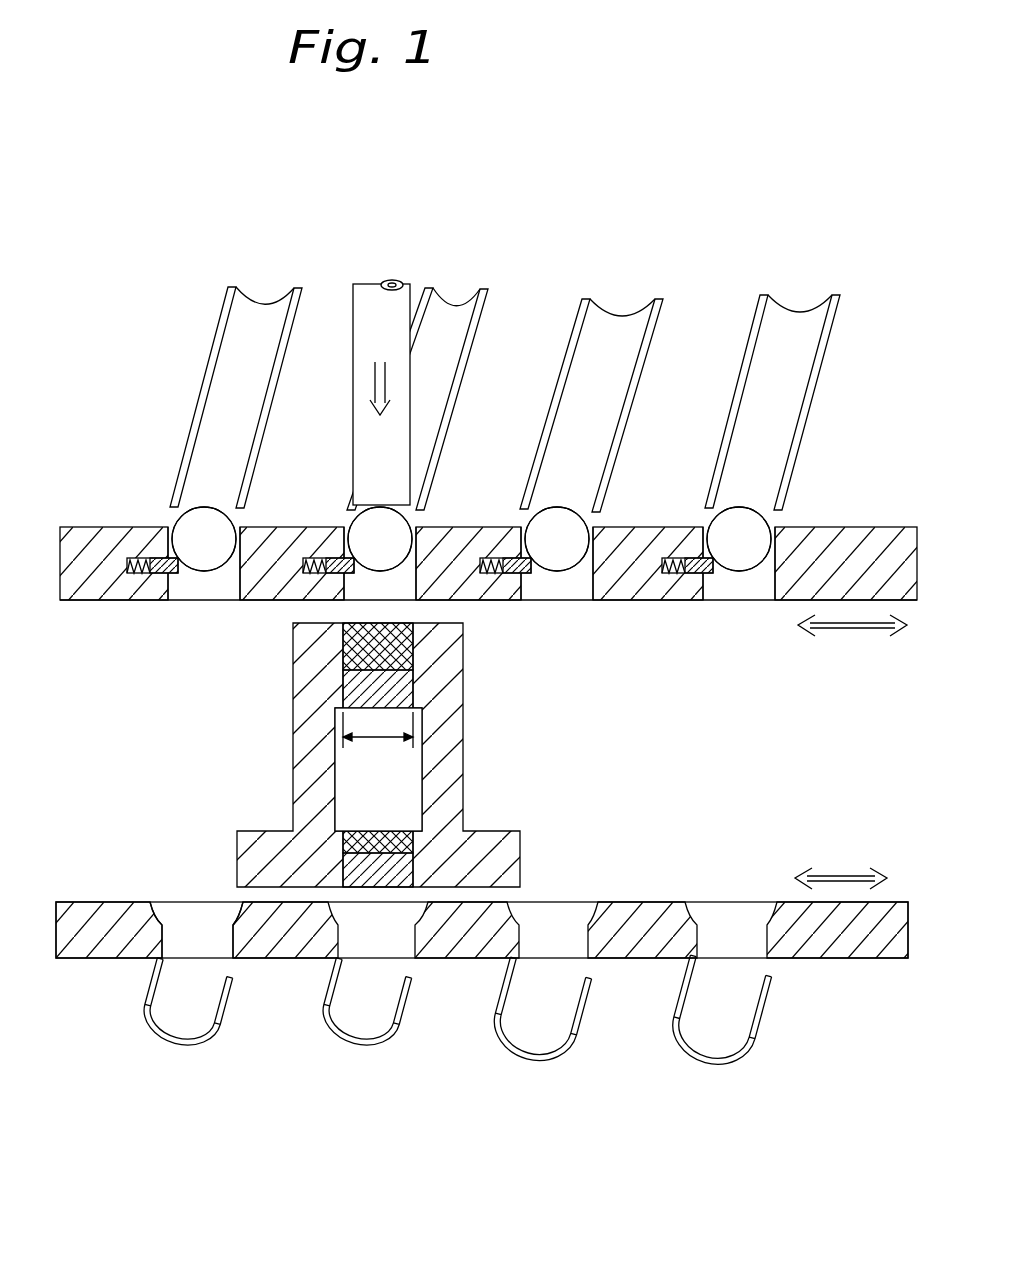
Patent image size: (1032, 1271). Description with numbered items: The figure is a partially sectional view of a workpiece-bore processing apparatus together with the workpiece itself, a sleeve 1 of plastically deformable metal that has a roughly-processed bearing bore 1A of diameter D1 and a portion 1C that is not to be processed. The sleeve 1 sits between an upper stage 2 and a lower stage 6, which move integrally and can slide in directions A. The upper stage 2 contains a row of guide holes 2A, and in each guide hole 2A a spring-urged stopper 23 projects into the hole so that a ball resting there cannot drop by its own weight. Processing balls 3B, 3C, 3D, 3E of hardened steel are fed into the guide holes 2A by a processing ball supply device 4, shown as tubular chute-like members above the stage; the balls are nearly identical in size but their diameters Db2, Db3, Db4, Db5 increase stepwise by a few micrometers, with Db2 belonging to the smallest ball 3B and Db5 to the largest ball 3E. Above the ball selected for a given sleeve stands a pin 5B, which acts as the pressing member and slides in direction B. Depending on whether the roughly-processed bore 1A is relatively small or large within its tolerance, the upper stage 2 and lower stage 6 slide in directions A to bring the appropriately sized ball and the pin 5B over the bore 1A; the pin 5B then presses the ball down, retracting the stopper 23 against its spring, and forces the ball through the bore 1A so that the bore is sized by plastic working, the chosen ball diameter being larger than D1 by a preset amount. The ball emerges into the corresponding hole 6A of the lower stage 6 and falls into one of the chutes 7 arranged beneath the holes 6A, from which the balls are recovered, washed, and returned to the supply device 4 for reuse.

The sleeve 1 is at (453, 665).
The bearing bore 1A is at (417, 685).
The portion not to be processed 1C is at (392, 787).
The upper stage 2 is at (104, 542).
The guide holes 2A is at (165, 548).
The stopper 23 is at (347, 575).
The processing ball 3B is at (236, 522).
The processing ball 3C is at (410, 519).
The processing ball 3D is at (588, 523).
The processing ball 3E is at (768, 520).
The processing ball supply device 4 is at (207, 310).
The pin 5B is at (363, 297).
The lower stage 6 is at (100, 917).
The holes 6A is at (181, 923).
The chutes 7 is at (317, 1013).
The diameter of processing ball 3B Db2 is at (204, 539).
The diameter of processing ball 3C Db3 is at (380, 539).
The diameter of processing ball 3D Db4 is at (557, 539).
The diameter of processing ball 3E Db5 is at (739, 539).
The diameter of roughly-processed bore D1 is at (378, 731).
The sliding directions of upper stage A is at (851, 752).
The pressing direction of pin B is at (380, 366).